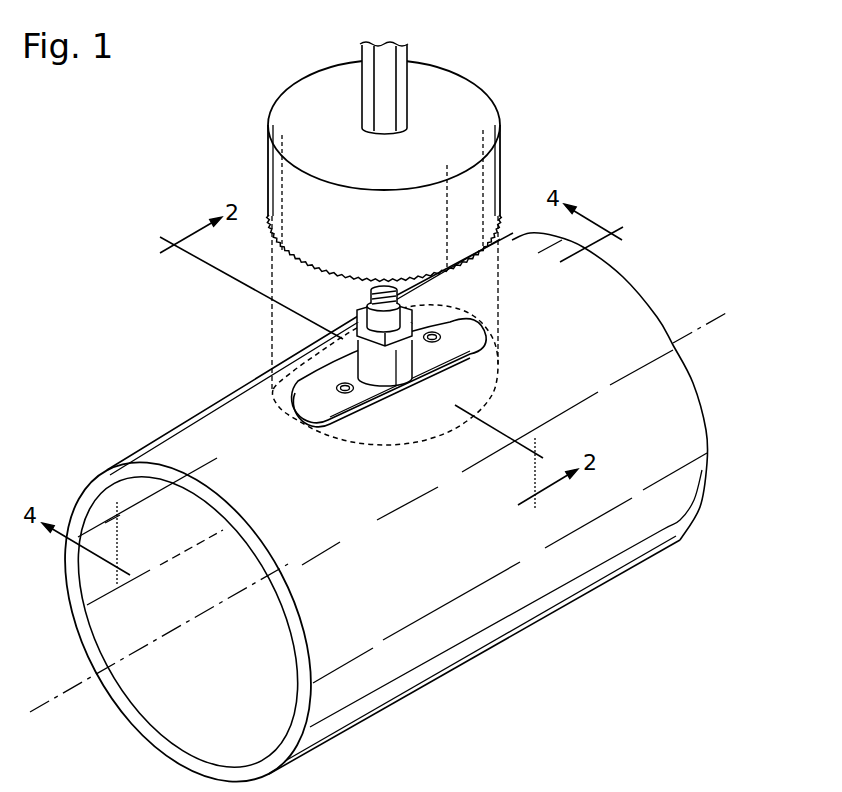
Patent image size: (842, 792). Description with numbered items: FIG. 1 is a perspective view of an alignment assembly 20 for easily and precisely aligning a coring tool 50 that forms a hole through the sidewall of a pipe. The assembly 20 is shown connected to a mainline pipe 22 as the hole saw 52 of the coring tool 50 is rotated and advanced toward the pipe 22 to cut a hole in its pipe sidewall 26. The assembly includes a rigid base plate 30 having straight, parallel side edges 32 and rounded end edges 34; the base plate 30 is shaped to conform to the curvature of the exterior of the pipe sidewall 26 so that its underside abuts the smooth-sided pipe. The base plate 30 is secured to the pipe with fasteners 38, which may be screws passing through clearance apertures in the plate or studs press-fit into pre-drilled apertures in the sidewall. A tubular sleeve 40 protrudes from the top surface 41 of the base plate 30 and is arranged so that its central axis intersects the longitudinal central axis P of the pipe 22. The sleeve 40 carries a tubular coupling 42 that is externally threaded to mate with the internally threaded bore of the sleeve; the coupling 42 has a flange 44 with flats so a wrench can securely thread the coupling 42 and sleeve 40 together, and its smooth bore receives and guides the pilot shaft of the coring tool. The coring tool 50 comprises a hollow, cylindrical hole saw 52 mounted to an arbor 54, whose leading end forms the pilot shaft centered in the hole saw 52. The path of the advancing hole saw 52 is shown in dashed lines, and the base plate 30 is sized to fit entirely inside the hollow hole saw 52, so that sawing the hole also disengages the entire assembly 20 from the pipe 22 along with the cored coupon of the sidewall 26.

The alignment assembly 20 is at (471, 279).
The mainline pipe 22 is at (70, 491).
The pipe sidewall 26 is at (188, 616).
The base plate 30 is at (415, 403).
The side edges 32 is at (317, 372).
The end edges 34 is at (470, 328).
The fasteners 38 is at (439, 342).
The tubular sleeve 40 is at (409, 358).
The top surface 41 is at (381, 392).
The tubular coupling 42 is at (368, 308).
The flange 44 is at (415, 322).
The coring tool 50 is at (514, 127).
The hole saw 52 is at (269, 159).
The arbor 54 is at (363, 113).
The longitudinal central axis P is at (161, 636).